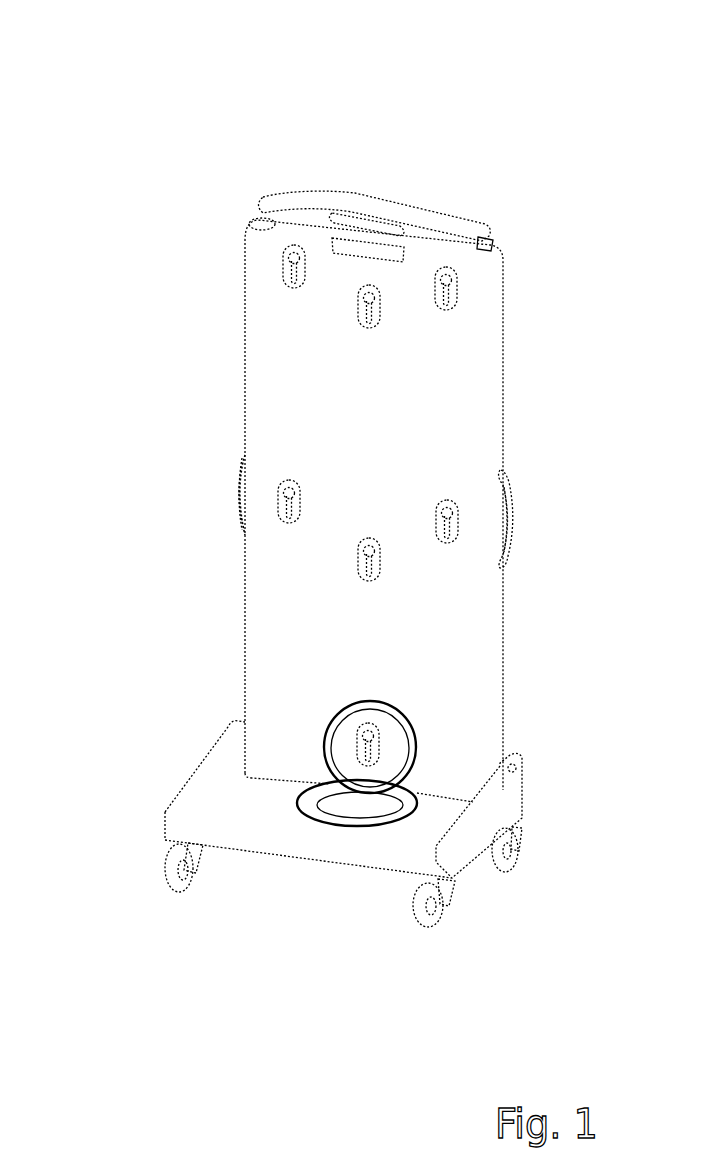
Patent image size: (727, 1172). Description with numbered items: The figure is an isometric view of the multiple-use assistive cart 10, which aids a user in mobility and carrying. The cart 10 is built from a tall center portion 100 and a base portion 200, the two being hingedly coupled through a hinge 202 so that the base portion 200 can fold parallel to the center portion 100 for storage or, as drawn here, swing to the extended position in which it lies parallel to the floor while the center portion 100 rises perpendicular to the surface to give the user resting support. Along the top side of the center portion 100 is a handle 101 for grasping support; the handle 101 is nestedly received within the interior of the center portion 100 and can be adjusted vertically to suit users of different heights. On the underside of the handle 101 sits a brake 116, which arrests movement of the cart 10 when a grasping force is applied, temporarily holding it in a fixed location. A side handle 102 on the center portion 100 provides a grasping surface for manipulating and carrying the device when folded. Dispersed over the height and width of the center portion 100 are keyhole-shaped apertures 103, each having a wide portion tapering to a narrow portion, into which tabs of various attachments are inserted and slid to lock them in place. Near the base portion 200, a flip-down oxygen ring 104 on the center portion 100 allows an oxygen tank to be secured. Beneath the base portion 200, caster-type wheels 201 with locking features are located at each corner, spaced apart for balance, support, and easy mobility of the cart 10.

The cart 10 is at (190, 129).
The center portion 100 is at (485, 360).
The handle 101 is at (407, 205).
The brake 116 is at (333, 215).
The side handle 102 is at (515, 515).
The apertures 103 is at (284, 276).
The flip-down oxygen ring 104 is at (422, 748).
The base portion 200 is at (205, 830).
The wheels 201 is at (167, 870).
The hinge 202 is at (520, 770).